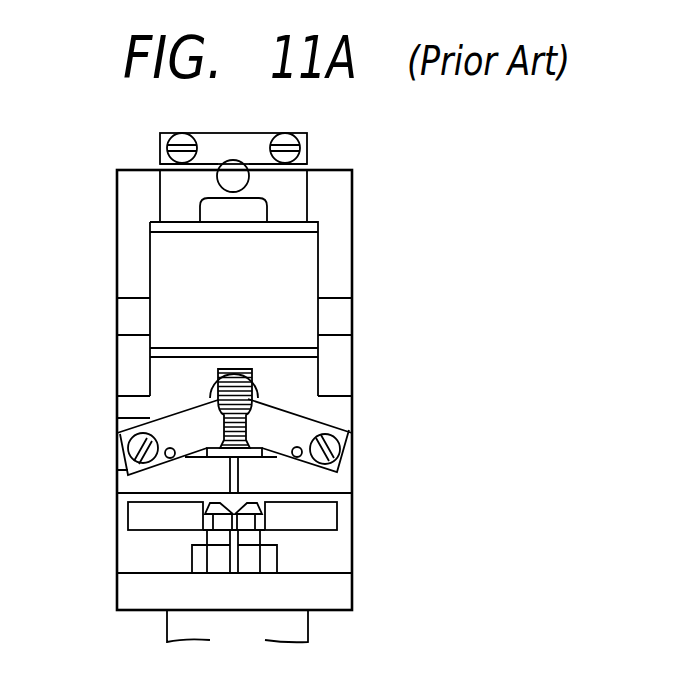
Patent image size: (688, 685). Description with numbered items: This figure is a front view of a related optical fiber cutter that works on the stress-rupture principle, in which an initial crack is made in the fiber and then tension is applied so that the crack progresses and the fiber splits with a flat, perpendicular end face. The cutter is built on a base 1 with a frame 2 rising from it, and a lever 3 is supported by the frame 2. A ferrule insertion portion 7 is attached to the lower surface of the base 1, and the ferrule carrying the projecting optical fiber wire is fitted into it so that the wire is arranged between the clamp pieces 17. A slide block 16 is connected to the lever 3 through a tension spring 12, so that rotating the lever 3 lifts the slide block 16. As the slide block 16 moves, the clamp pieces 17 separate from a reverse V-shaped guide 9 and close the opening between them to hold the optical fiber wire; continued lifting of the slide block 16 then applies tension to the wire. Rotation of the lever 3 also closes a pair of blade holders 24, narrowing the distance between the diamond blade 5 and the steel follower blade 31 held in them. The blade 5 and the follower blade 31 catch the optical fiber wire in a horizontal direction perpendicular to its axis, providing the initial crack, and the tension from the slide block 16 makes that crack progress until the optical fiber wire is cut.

The base 1 is at (325, 595).
The frame 2 is at (343, 217).
The lever 3 is at (308, 134).
The diamond blade 5 is at (205, 515).
The ferrule insertion portion 7 is at (230, 557).
The reverse V-shaped guide 9 is at (130, 488).
The tension spring 12 is at (207, 397).
The slide block 16 is at (140, 410).
The clamp pieces 17 is at (290, 422).
The blade holders 24 is at (138, 511).
The follower blade 31 is at (247, 513).